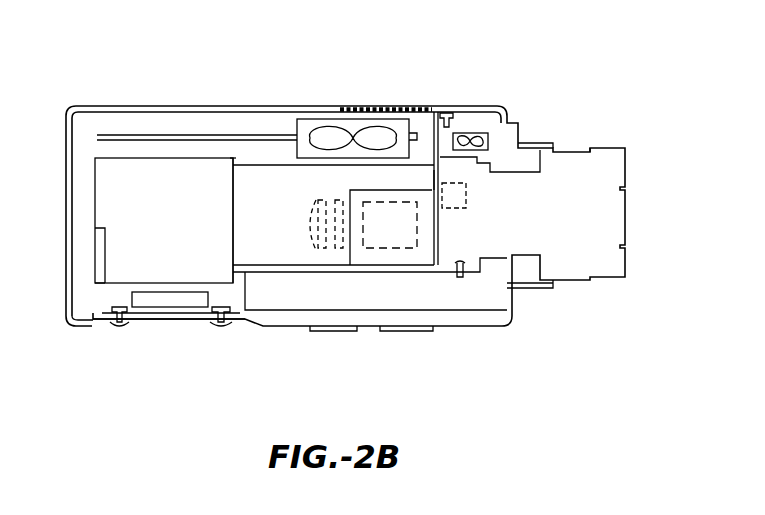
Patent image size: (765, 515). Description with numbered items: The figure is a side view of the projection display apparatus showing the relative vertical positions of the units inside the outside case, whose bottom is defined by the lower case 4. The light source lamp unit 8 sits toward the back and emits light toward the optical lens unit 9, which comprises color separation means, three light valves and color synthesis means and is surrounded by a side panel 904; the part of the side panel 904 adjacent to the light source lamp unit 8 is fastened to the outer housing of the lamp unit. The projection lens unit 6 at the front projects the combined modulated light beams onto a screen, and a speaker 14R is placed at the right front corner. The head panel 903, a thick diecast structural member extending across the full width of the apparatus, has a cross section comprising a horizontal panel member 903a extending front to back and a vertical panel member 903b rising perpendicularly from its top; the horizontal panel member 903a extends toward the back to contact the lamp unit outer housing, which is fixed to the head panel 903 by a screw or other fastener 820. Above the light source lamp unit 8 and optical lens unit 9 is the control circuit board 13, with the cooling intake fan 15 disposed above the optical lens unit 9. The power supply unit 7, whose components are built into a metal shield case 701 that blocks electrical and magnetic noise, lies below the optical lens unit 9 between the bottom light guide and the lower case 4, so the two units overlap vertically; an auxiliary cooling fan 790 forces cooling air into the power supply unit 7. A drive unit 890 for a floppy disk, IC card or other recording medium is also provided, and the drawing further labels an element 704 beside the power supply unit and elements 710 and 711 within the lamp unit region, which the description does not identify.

The lower case 4 is at (93, 325).
The projection lens unit 6 is at (607, 152).
The power supply unit 7 is at (460, 300).
The light source lamp unit 8 is at (142, 169).
The optical lens unit 9 is at (278, 161).
The control circuit board 13 is at (185, 135).
The speaker 14R is at (505, 255).
The cooling intake fan 15 is at (375, 119).
The shield case 701 is at (328, 331).
The support block 704 is at (465, 263).
The inner rib 710 is at (107, 243).
The bottom rib 711 is at (100, 283).
The auxiliary cooling fan 790 is at (488, 142).
The fastener 820 is at (198, 313).
The drive unit 890 is at (168, 300).
The head panel 903 is at (455, 125).
The horizontal panel member 903a is at (270, 263).
The vertical panel member 903b is at (436, 178).
The side panel 904 is at (233, 160).